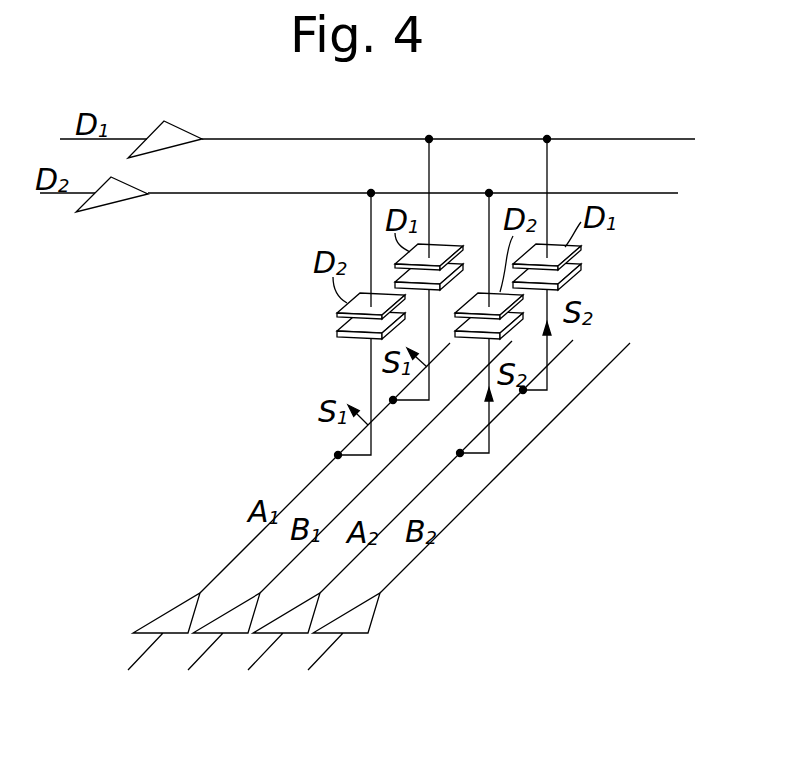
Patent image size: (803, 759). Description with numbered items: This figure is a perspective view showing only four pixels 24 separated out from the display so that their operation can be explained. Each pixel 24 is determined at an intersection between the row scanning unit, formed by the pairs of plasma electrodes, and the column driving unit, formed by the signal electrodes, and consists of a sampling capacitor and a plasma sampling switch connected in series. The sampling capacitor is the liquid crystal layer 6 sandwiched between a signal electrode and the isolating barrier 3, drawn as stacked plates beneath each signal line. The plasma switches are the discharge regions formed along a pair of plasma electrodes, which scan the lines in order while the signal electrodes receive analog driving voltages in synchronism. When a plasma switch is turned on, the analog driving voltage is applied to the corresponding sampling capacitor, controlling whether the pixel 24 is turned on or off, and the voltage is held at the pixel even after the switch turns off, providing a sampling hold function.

The pixel 24 is at (297, 292).
The liquid crystal layer 6 is at (337, 326).
The isolating barrier 3 is at (321, 310).